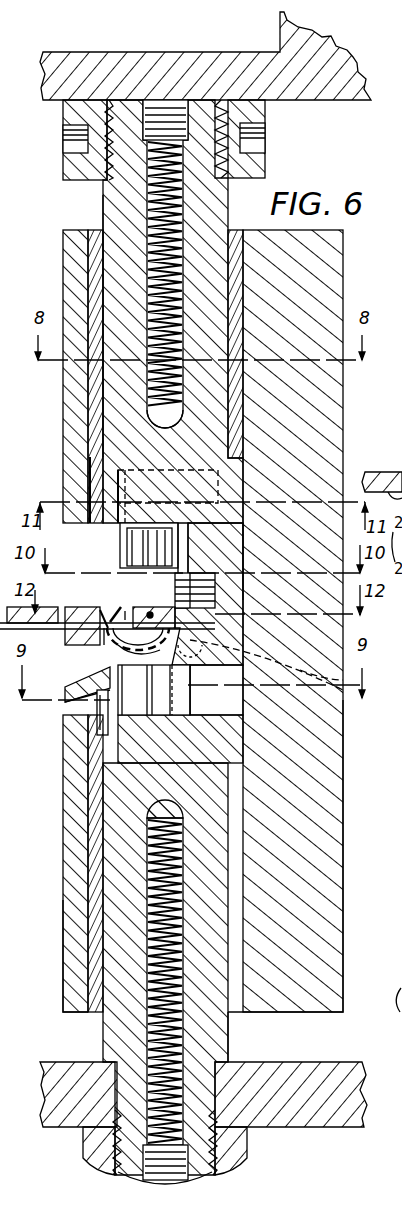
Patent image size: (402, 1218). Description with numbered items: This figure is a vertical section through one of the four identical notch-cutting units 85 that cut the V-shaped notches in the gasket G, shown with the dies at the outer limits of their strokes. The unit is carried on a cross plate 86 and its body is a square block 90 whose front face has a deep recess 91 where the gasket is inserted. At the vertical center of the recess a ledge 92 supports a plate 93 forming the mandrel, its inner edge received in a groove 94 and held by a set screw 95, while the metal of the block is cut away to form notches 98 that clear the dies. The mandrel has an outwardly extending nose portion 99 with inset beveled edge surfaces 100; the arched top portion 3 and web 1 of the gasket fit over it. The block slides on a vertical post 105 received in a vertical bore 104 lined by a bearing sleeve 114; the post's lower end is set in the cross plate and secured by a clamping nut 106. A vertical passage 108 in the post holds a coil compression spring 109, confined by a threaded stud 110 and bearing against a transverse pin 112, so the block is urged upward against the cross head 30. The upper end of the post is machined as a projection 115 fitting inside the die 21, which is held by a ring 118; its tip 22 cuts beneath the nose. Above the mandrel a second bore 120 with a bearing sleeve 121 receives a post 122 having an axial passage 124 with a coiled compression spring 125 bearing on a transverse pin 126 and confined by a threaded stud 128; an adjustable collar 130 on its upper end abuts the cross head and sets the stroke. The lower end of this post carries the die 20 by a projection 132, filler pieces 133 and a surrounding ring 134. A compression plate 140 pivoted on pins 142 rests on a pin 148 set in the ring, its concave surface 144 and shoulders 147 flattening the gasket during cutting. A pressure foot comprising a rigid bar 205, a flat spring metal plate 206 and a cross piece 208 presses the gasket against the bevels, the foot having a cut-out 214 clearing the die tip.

The cross head 30 is at (250, 56).
The threaded stud 128 is at (162, 104).
The adjustable collar 130 is at (70, 165).
The coiled compression spring 125 is at (150, 188).
The axial passage 124 is at (150, 219).
The post 122 is at (110, 386).
The transverse pin 126 is at (150, 425).
The bearing sleeve 121 is at (97, 246).
The second bore 120 is at (92, 277).
The notch-cutting unit 85 is at (345, 244).
The block 90 is at (345, 825).
The projection 132 is at (135, 481).
The filler pieces 133 is at (92, 475).
The surrounding ring 134 is at (104, 526).
The die 20 is at (170, 548).
The recess 91 is at (103, 568).
The plate 93 is at (208, 610).
The set screw 95 is at (215, 600).
The notches 98 is at (178, 600).
The groove 94 is at (215, 621).
The flat spring metal plate 206 is at (75, 631).
The rigid bar 205 is at (50, 608).
The hollow arched top portion 3 is at (138, 640).
The cut-out 214 is at (115, 616).
The cross piece 208 is at (110, 606).
The nose portion 99 is at (125, 611).
The web 1 is at (150, 612).
The gasket G is at (106, 643).
The beveled edge surfaces 100 is at (122, 650).
The ledge 92 is at (290, 688).
The pivot pins 142 is at (343, 682).
The shoulders 147 is at (166, 669).
The plate 140 is at (75, 691).
The tip 22 is at (105, 700).
The projection 115 is at (205, 749).
The concavity 144 is at (154, 690).
The die 21 is at (182, 700).
The pin 148 is at (100, 728).
The ring 118 is at (92, 770).
The bearing sleeve 114 is at (95, 906).
The vertical bore 104 is at (92, 968).
The vertical passage 108 is at (148, 1056).
The vertical post 105 is at (230, 1033).
The transverse pin 112 is at (150, 817).
The coil compression spring 109 is at (152, 1026).
The threaded stud 110 is at (190, 1178).
The cross plate 86 is at (366, 1088).
The clamping nut 106 is at (246, 1143).